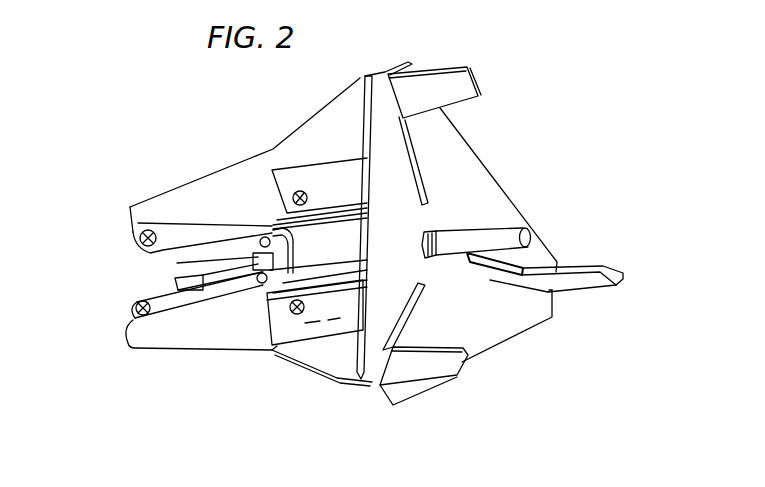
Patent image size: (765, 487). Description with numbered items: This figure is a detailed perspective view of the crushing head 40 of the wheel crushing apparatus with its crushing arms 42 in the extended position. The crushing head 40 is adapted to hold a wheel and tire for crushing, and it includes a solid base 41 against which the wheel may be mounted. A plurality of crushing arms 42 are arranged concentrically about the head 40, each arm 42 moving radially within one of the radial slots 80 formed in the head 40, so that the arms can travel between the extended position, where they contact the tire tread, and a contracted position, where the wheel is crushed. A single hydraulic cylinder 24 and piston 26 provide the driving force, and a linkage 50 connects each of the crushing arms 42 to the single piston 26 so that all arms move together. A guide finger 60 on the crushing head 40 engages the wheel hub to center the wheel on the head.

The hydraulic cylinder 24 is at (313, 258).
The hydraulic piston 26 is at (177, 263).
The crushing head 40 is at (499, 220).
The solid base 41 is at (507, 215).
The crushing arm 42 is at (467, 70).
The linkage 50 is at (173, 243).
The guide finger 60 is at (480, 233).
The radial slot 80 is at (418, 170).